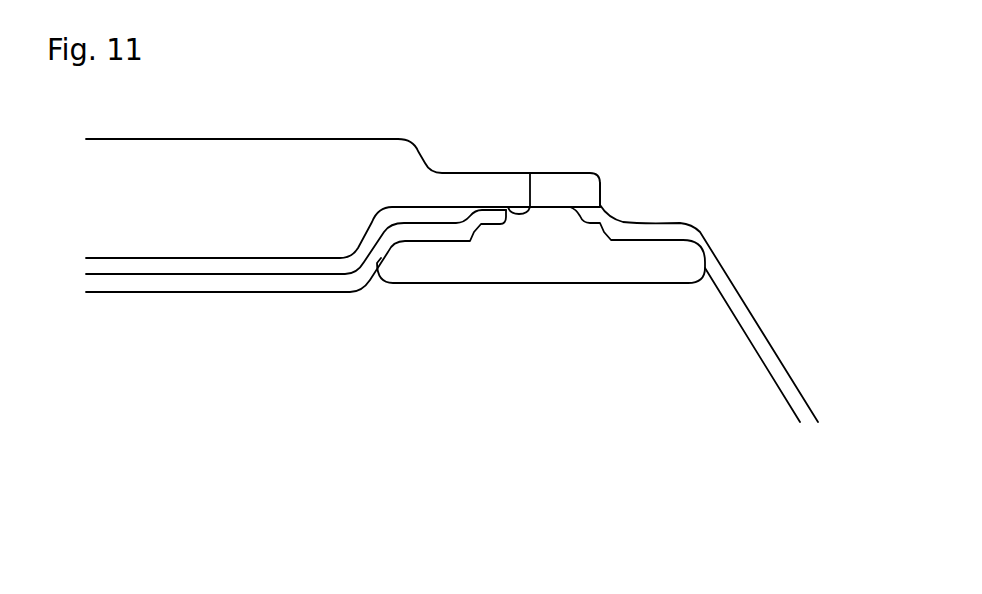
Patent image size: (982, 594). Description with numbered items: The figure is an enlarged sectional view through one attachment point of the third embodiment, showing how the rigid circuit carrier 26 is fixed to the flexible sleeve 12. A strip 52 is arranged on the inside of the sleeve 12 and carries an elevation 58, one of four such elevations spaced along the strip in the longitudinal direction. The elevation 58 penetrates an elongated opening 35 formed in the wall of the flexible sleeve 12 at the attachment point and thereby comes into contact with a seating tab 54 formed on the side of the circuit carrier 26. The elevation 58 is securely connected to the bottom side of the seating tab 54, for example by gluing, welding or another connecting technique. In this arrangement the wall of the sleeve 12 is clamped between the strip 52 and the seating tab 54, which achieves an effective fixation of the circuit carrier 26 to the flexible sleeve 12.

The flexible sleeve 12 is at (748, 307).
The circuit carrier 26 is at (248, 158).
The elongated opening 35 is at (530, 205).
The strip 52 is at (418, 263).
The seating tab 54 is at (578, 185).
The elevation 58 is at (558, 228).